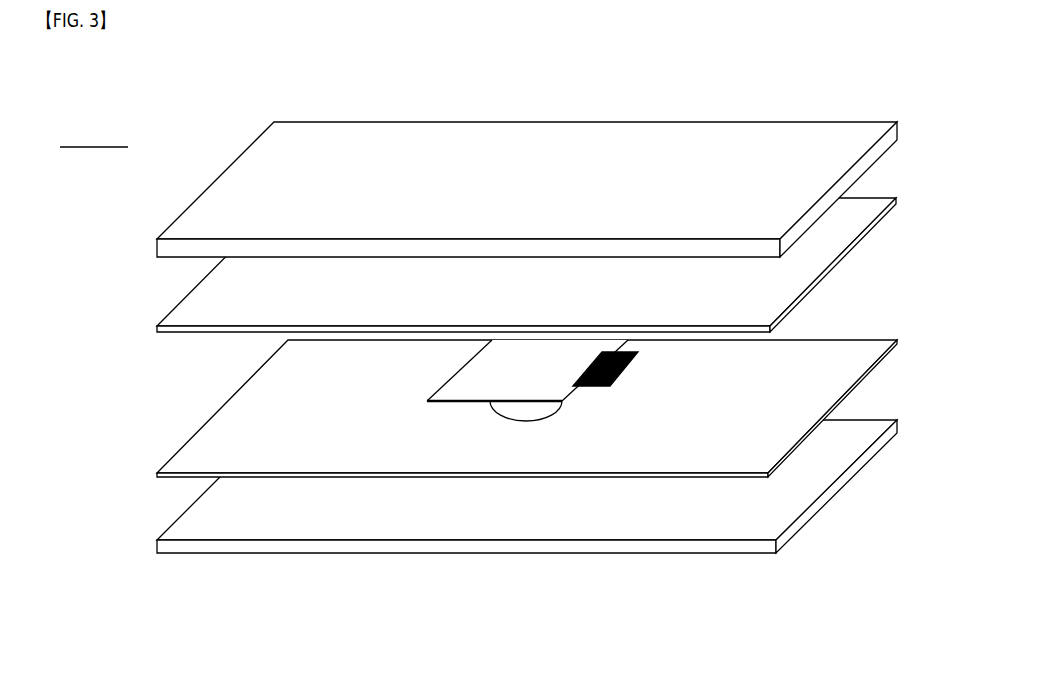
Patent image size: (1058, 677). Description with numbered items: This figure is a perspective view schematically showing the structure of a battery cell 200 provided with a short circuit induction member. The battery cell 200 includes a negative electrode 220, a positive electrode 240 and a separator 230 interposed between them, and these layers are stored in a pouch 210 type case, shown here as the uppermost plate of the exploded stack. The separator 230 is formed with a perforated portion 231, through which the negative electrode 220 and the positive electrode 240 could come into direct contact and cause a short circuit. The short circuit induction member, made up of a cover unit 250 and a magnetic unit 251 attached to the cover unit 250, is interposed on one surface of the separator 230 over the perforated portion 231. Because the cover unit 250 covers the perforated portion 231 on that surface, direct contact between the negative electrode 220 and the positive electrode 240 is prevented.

The battery cell 200 is at (94, 129).
The pouch 210 is at (822, 178).
The negative electrode 220 is at (822, 260).
The separator 230 is at (822, 398).
The perforated portion 231 is at (520, 417).
The positive electrode 240 is at (822, 475).
The cover unit 250 is at (473, 397).
The magnetic unit 251 is at (637, 362).